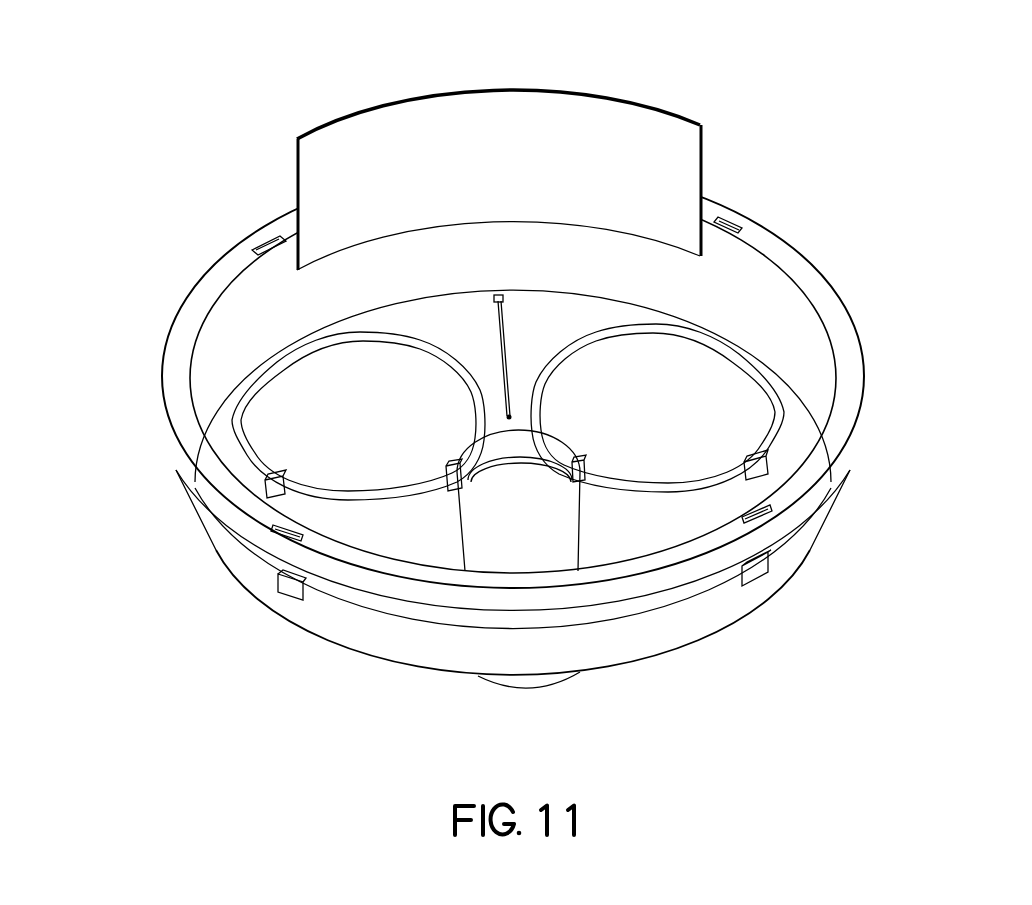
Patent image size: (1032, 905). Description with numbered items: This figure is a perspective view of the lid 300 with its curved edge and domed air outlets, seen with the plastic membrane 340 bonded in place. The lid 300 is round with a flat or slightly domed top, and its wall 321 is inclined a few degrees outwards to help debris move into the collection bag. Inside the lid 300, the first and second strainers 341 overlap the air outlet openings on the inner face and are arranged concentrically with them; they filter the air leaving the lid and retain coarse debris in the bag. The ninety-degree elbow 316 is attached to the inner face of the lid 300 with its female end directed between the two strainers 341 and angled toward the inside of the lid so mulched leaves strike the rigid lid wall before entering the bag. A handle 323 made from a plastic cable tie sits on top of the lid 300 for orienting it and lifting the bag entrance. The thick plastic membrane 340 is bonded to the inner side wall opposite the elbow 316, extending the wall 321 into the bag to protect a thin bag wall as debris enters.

The lid 300 is at (574, 426).
The 90 degree elbow 316 is at (403, 560).
The wall 321 is at (439, 365).
The handle 323 is at (291, 326).
The plastic membrane 340 is at (449, 151).
The strainer 341 is at (519, 399).